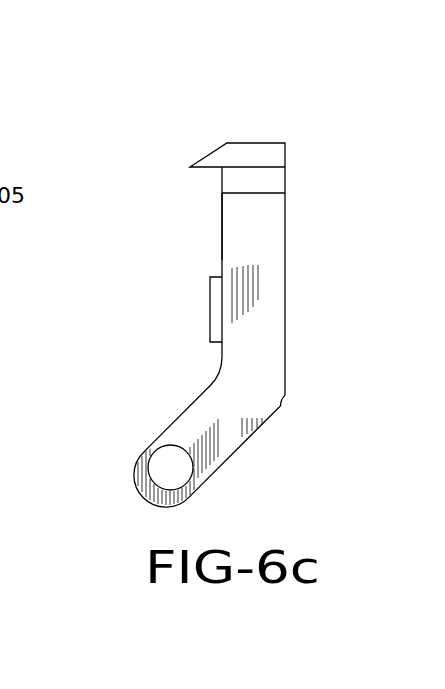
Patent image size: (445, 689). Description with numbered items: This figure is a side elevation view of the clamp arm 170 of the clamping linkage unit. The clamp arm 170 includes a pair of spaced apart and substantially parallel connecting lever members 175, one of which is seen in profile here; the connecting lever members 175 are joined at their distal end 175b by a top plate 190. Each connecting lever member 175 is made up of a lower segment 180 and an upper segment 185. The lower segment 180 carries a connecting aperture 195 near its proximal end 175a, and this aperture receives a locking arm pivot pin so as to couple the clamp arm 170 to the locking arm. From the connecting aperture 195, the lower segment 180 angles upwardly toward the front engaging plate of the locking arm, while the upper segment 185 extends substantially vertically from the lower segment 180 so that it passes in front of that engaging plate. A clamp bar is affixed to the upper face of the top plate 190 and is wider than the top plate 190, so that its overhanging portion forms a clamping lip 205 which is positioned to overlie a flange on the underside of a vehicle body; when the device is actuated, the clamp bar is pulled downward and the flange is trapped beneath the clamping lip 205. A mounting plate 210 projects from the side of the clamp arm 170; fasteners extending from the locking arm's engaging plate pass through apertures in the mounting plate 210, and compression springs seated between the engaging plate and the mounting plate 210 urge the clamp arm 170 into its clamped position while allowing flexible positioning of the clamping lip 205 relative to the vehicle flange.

The clamp arm 170 is at (314, 129).
The connecting lever member 175 is at (285, 348).
The proximal end 175a is at (145, 483).
The distal end 175b is at (238, 204).
The lower segment 180 is at (230, 433).
The upper segment 185 is at (258, 245).
The top plate 190 is at (272, 183).
The connecting aperture 195 is at (170, 447).
The clamping lip 205 is at (205, 168).
The mounting plate 210 is at (211, 311).